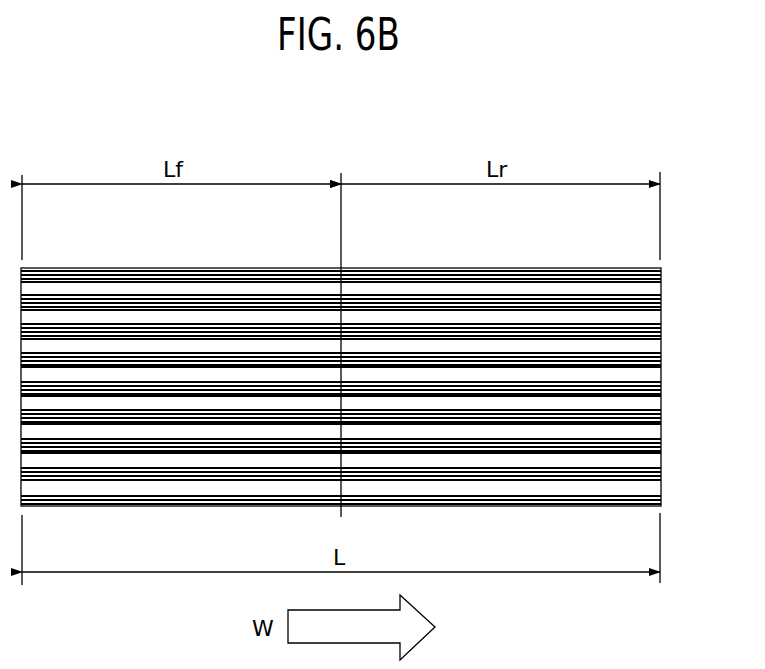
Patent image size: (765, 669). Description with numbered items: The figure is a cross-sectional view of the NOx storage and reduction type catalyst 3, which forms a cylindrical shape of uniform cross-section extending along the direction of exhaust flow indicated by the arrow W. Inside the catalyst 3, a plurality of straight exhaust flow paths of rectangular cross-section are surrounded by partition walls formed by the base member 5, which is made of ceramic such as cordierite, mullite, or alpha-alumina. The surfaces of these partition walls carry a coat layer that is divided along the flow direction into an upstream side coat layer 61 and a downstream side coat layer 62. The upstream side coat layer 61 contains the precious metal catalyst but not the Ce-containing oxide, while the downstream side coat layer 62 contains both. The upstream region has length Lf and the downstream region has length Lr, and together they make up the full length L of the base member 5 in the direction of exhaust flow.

The NOx storage and reduction type catalyst 3 is at (72, 152).
The base member 5 is at (613, 293).
The upstream side coat layer 61 is at (126, 296).
The downstream side coat layer 62 is at (417, 295).